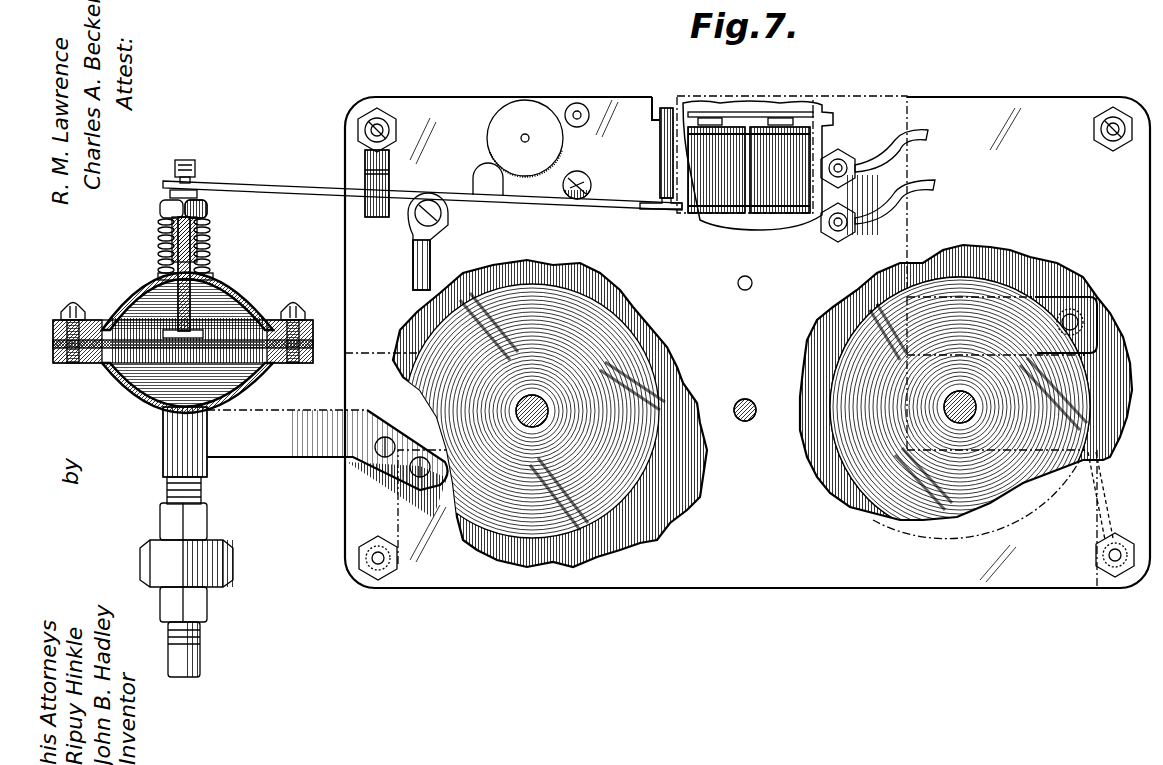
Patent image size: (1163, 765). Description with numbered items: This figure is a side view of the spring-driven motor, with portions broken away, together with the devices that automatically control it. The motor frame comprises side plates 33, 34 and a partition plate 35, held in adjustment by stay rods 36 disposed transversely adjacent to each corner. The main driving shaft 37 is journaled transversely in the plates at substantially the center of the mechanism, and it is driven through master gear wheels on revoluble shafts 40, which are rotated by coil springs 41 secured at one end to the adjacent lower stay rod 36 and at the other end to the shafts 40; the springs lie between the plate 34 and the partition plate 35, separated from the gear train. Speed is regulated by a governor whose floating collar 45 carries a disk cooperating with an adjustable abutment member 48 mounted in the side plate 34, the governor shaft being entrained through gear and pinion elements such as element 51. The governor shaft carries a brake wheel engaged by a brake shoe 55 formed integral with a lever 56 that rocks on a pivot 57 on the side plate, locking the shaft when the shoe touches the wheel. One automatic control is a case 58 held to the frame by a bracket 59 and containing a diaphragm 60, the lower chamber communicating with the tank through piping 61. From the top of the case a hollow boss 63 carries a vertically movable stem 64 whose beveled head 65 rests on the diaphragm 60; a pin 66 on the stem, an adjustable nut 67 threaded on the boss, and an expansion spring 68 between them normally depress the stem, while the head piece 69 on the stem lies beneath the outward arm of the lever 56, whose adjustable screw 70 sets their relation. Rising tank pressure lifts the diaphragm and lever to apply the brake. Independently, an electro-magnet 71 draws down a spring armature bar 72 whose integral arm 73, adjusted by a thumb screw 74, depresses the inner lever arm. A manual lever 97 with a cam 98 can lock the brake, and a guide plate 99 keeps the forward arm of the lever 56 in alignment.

The side plate 33 is at (1055, 280).
The side plate 34 is at (830, 470).
The partition plate 35 is at (680, 505).
The stay rods 36 is at (372, 127).
The main driving shaft 37 is at (752, 404).
The revoluble shafts 40 is at (540, 405).
The coil springs 41 is at (610, 488).
The floating collar 45 is at (529, 137).
The adjustable abutment member 48 is at (580, 112).
The gear and pinion element 51 is at (525, 138).
The brake shoe 55 is at (488, 179).
The lever 56 is at (630, 208).
The pivot 57 is at (587, 176).
The case 58 is at (118, 382).
The bracket 59 is at (288, 448).
The diaphragm 60 is at (235, 340).
The piping 61 is at (200, 658).
The hollow boss 63 is at (212, 252).
The stem 64 is at (190, 300).
The beveled head 65 is at (200, 334).
The pin 66 is at (158, 275).
The adjustable nut 67 is at (208, 208).
The expansion spring 68 is at (158, 240).
The head piece 69 is at (170, 193).
The adjustable screw 70 is at (195, 165).
The electro-magnet 71 is at (780, 197).
The spring armature bar 72 is at (775, 110).
The arm 73 is at (661, 135).
The thumb screw 74 is at (672, 212).
The lever 97 is at (431, 275).
The cam 98 is at (408, 222).
The guide plate 99 is at (378, 188).